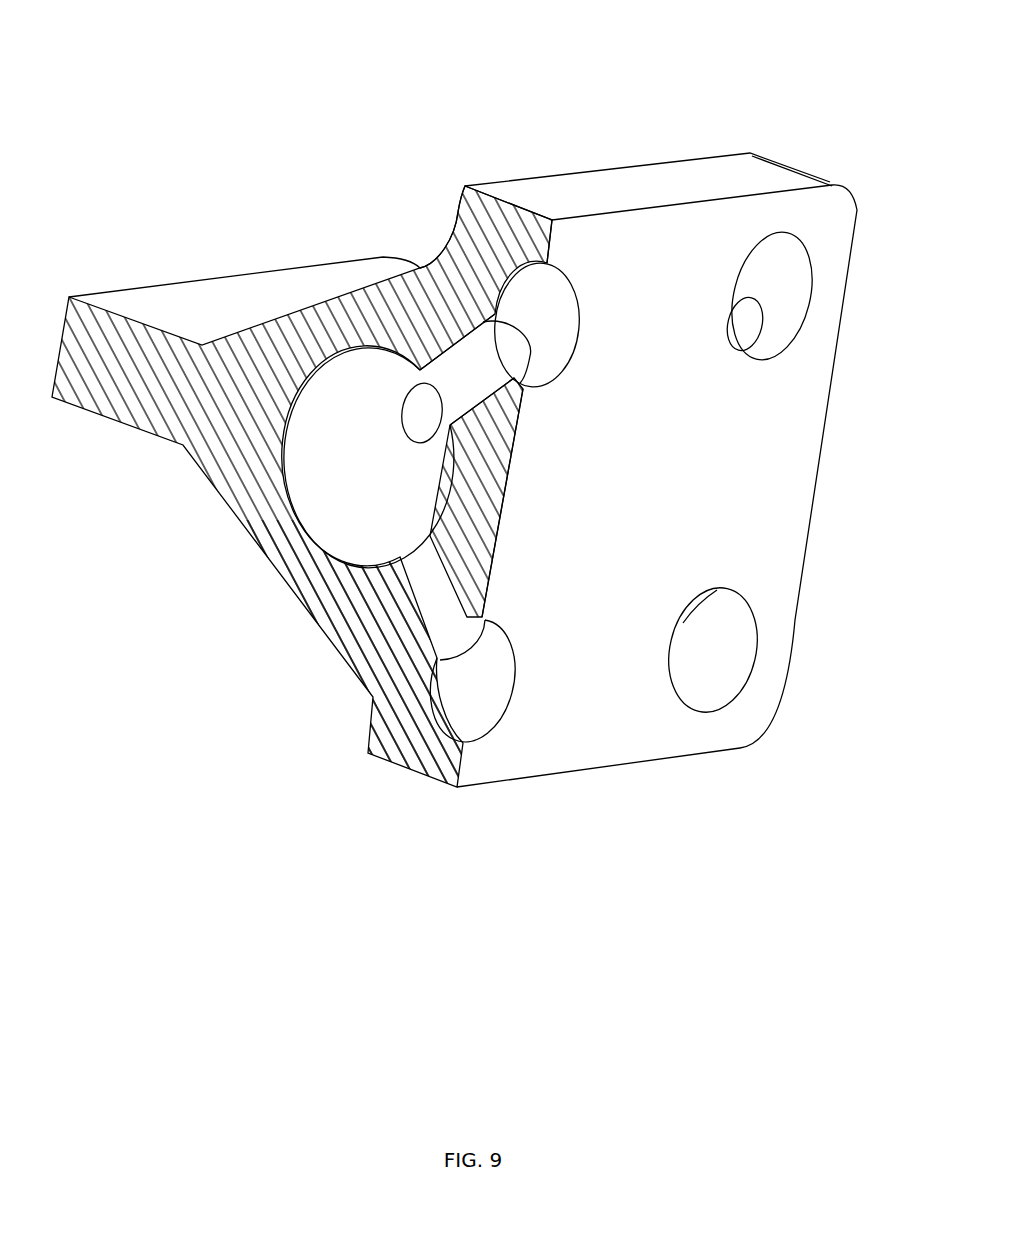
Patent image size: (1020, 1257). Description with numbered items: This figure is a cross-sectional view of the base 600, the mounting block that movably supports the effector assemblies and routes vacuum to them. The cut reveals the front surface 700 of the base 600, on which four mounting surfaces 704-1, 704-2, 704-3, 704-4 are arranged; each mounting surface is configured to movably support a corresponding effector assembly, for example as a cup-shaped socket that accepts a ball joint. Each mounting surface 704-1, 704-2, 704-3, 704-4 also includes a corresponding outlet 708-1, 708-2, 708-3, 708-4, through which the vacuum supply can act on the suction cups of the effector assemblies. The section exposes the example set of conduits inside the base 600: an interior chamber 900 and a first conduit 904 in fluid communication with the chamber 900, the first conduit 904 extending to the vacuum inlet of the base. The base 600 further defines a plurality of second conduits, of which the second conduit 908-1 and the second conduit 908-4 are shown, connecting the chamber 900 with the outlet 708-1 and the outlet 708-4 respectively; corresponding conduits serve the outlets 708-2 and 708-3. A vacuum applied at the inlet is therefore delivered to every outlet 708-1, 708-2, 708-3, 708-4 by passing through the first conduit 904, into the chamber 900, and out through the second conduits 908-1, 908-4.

The base 600 is at (750, 155).
The front surface 700 is at (612, 715).
The mounting surface 704-1 is at (554, 281).
The mounting surface 704-2 is at (767, 260).
The mounting surface 704-3 is at (710, 690).
The mounting surface 704-4 is at (473, 703).
The outlet 708-1 is at (520, 297).
The outlet 708-2 is at (743, 332).
The outlet 708-3 is at (702, 603).
The outlet 708-4 is at (450, 648).
The interior chamber 900 is at (302, 486).
The first conduit 904 is at (418, 410).
The second conduit 908-1 is at (483, 363).
The second conduit 908-4 is at (420, 583).